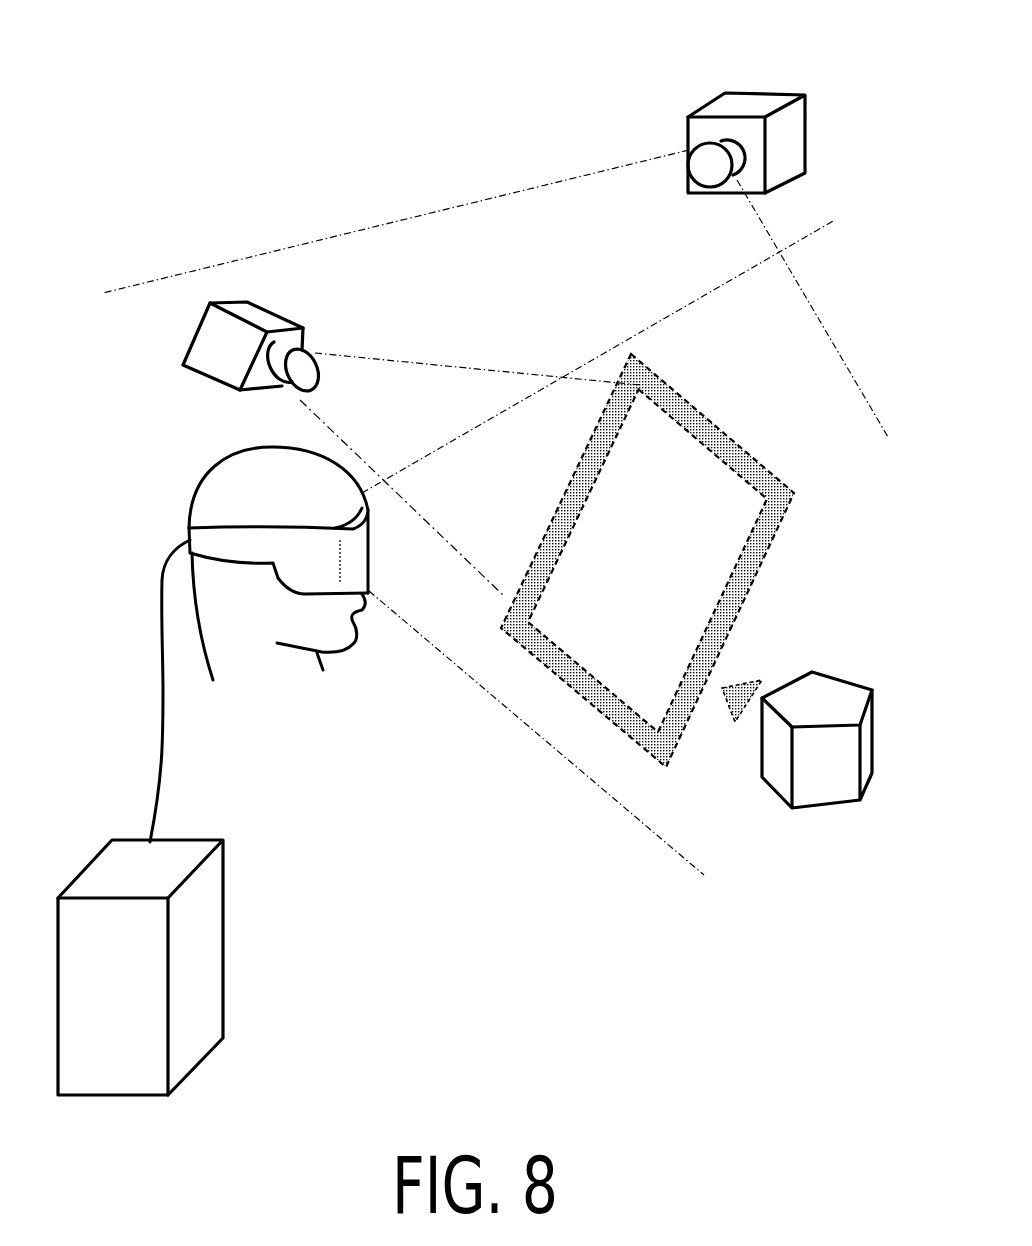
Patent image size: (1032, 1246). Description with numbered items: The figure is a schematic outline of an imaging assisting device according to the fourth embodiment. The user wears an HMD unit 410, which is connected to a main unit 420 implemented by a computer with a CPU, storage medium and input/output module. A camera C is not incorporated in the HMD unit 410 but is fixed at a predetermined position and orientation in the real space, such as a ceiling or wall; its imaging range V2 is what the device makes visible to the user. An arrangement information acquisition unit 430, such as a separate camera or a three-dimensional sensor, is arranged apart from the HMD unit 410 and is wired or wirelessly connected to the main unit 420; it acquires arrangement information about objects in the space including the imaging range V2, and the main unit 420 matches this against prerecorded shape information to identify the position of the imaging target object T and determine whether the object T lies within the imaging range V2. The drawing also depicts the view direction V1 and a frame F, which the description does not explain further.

The arrangement information acquisition unit 430 is at (760, 108).
The camera C is at (267, 330).
The visual line of camera 430 V1 is at (655, 323).
The imaging range V2 is at (462, 365).
The frame F is at (658, 377).
The imaging target object T is at (843, 681).
The HMD unit 410 is at (188, 538).
The main unit 420 is at (183, 853).